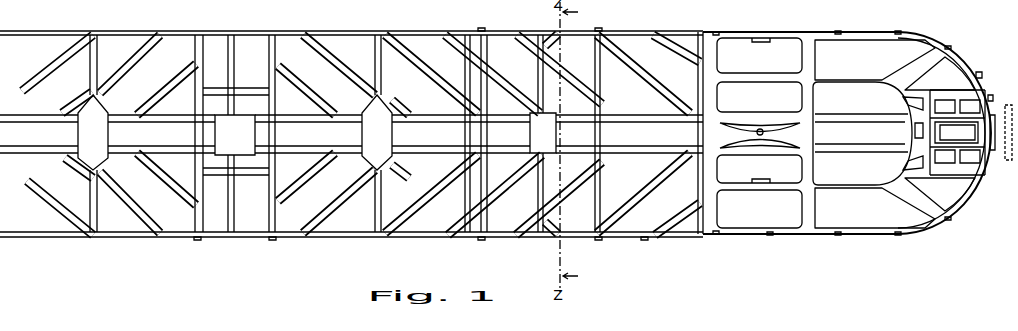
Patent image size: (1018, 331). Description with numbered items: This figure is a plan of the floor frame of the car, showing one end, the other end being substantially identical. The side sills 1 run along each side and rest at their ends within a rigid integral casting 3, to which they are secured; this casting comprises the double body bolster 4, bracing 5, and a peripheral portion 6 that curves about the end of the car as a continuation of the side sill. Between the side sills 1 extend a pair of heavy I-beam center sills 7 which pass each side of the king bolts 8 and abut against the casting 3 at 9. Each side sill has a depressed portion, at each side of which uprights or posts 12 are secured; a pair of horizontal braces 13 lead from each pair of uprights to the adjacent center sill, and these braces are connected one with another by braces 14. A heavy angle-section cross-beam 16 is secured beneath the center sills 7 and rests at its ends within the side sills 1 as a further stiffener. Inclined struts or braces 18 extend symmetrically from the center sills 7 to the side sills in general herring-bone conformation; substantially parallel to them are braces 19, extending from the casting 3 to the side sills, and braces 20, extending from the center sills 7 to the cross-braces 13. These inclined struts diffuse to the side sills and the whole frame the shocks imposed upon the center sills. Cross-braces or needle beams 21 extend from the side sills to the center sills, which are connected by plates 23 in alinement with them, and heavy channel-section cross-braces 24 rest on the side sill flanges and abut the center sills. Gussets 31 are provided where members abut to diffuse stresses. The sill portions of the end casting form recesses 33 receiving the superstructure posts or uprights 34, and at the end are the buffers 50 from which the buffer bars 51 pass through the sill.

The side sills 1 is at (428, 31).
The rigid integral casting 3 is at (905, 129).
The double body bolster 4 is at (712, 172).
The bracing 5 is at (900, 78).
The peripheral portion 6 is at (982, 75).
The center sills 7 is at (441, 153).
The king bolts 8 is at (757, 133).
The abutment of center sills against casting 9 is at (930, 119).
The uprights or posts 12 is at (197, 240).
The horizontal braces 13 is at (204, 190).
The braces 14 is at (253, 88).
The cross-beam 16 is at (233, 62).
The inclined struts or braces 18 is at (72, 106).
The braces 19 is at (693, 52).
The braces 20 is at (163, 93).
The cross-braces or needle beams 21 is at (541, 197).
The plates 23 is at (531, 133).
The cross-braces 24 is at (93, 214).
The gussets 31 is at (235, 133).
The recesses 33 is at (770, 236).
The posts or uprights 34 is at (644, 240).
The buffers 50 is at (1008, 162).
The buffer bars 51 is at (1003, 104).